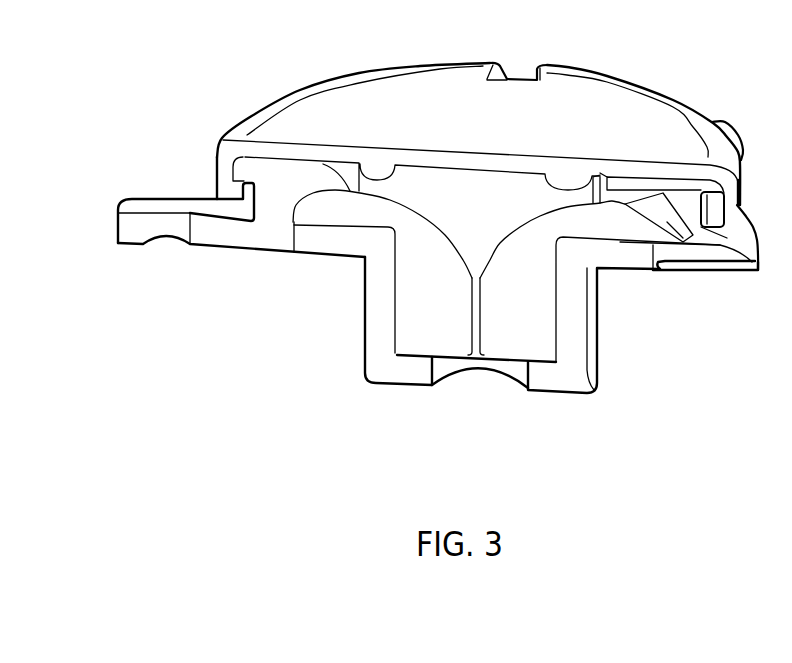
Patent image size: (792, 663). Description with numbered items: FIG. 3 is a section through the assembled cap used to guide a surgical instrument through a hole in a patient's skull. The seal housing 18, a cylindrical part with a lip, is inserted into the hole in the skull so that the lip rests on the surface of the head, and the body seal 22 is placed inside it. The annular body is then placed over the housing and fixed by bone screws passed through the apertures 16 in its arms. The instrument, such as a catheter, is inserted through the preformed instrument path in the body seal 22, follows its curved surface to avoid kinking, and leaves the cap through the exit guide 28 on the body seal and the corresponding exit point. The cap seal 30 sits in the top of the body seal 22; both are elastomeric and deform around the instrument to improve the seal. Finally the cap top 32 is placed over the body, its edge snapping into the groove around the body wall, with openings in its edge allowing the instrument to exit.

The aperture 16 is at (169, 223).
The seal housing 18 is at (362, 361).
The body seal 22 is at (462, 345).
The exit guide 28 is at (683, 242).
The cap seal 30 is at (540, 183).
The cap top 32 is at (568, 98).